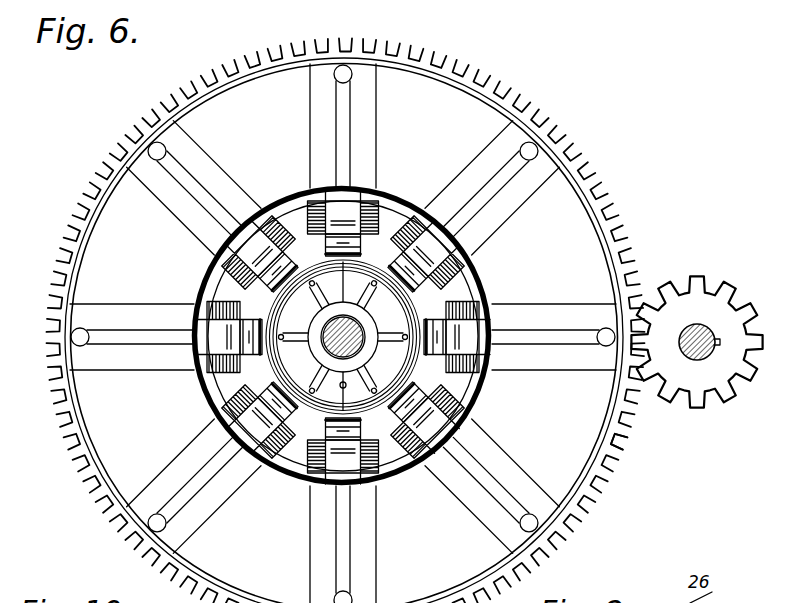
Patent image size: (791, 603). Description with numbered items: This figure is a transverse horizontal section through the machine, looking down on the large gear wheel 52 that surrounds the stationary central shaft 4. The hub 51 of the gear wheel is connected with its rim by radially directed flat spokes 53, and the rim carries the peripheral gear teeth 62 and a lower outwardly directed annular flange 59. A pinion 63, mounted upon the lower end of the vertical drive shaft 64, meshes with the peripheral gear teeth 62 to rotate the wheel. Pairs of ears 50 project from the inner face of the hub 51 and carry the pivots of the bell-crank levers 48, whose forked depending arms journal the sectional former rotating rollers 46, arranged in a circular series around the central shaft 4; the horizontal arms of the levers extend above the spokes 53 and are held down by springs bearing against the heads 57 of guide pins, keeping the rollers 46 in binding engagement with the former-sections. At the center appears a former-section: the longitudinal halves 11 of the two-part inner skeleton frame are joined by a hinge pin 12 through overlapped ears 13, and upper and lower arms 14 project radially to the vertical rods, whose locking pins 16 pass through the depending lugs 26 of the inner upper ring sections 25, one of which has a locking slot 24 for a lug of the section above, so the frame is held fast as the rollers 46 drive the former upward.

The stationary central shaft 4 is at (345, 336).
The longitudinal halves of the inner skeleton frame 11 is at (318, 316).
The hinge pin 12 is at (338, 386).
The overlapped ears 13 is at (348, 385).
The upper and lower arms 14 is at (366, 288).
The locking pins 16 is at (368, 286).
The locking slot 24 is at (400, 368).
The inner upper ring sections 25 is at (268, 372).
The depending lugs 26 is at (278, 348).
The sectional former rotating rollers 46 is at (362, 240).
The bell-crank levers 48 is at (225, 258).
The pairs of ears 50 is at (300, 203).
The hub 51 is at (212, 383).
The large gear wheel 52 is at (600, 450).
The flat spokes 53 is at (312, 133).
The heads of the guide pins 57 is at (352, 76).
The annular flange 59 is at (613, 450).
The peripheral gear teeth 62 is at (613, 218).
The pinion 63 is at (690, 283).
The vertical drive shaft 64 is at (704, 335).